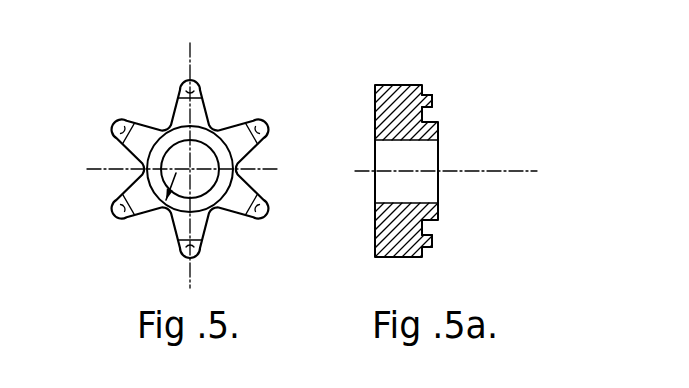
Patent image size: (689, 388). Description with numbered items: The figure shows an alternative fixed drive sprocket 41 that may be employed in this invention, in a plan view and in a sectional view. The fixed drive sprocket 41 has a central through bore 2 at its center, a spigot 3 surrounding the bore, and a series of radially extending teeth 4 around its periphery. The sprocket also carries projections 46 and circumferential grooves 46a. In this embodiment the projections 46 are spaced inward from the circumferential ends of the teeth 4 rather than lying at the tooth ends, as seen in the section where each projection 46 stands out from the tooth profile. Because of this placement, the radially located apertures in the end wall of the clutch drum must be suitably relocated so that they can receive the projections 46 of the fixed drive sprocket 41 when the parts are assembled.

In FIG. 5, the central through bore 2 is at (163, 207).
In FIG. 5, the spigot 3 is at (147, 184).
In FIG. 5, the teeth 4 is at (258, 170).
In FIG. 5, the fixed drive sprocket 41 is at (240, 90).
In FIG. 5A, the fixed drive sprocket 41 is at (470, 145).
In FIG. 5, the projections 46 is at (176, 96).
In FIG. 5A, the projections 46 is at (440, 100).
In FIG. 5A, the circumferential grooves 46a is at (427, 95).